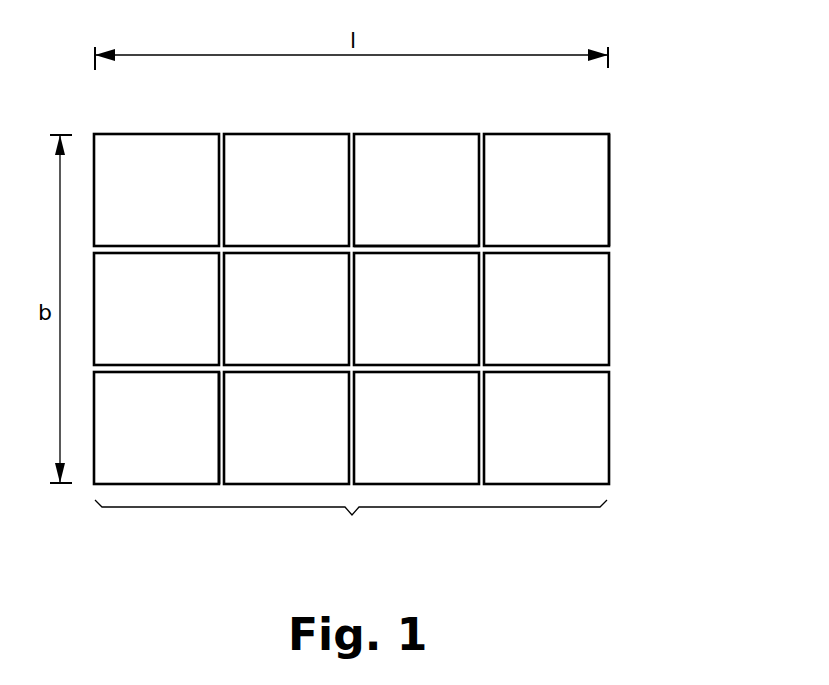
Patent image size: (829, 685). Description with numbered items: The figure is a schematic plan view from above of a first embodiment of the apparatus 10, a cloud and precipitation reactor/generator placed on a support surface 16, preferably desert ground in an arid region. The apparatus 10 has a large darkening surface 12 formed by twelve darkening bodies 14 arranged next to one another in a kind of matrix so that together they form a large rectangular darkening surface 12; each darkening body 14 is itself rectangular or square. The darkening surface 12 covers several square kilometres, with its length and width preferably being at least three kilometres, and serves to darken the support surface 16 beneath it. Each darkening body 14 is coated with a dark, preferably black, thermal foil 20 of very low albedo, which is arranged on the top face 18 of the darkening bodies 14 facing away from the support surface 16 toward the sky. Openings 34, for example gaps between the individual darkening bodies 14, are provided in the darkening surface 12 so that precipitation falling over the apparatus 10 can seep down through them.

The apparatus 10 is at (648, 80).
The darkening surface 12 is at (351, 523).
The darkening body 14 is at (288, 155).
The support surface 16 is at (674, 324).
The top face 18 is at (584, 184).
The thermal foil 20 is at (530, 157).
The openings 34 is at (422, 248).